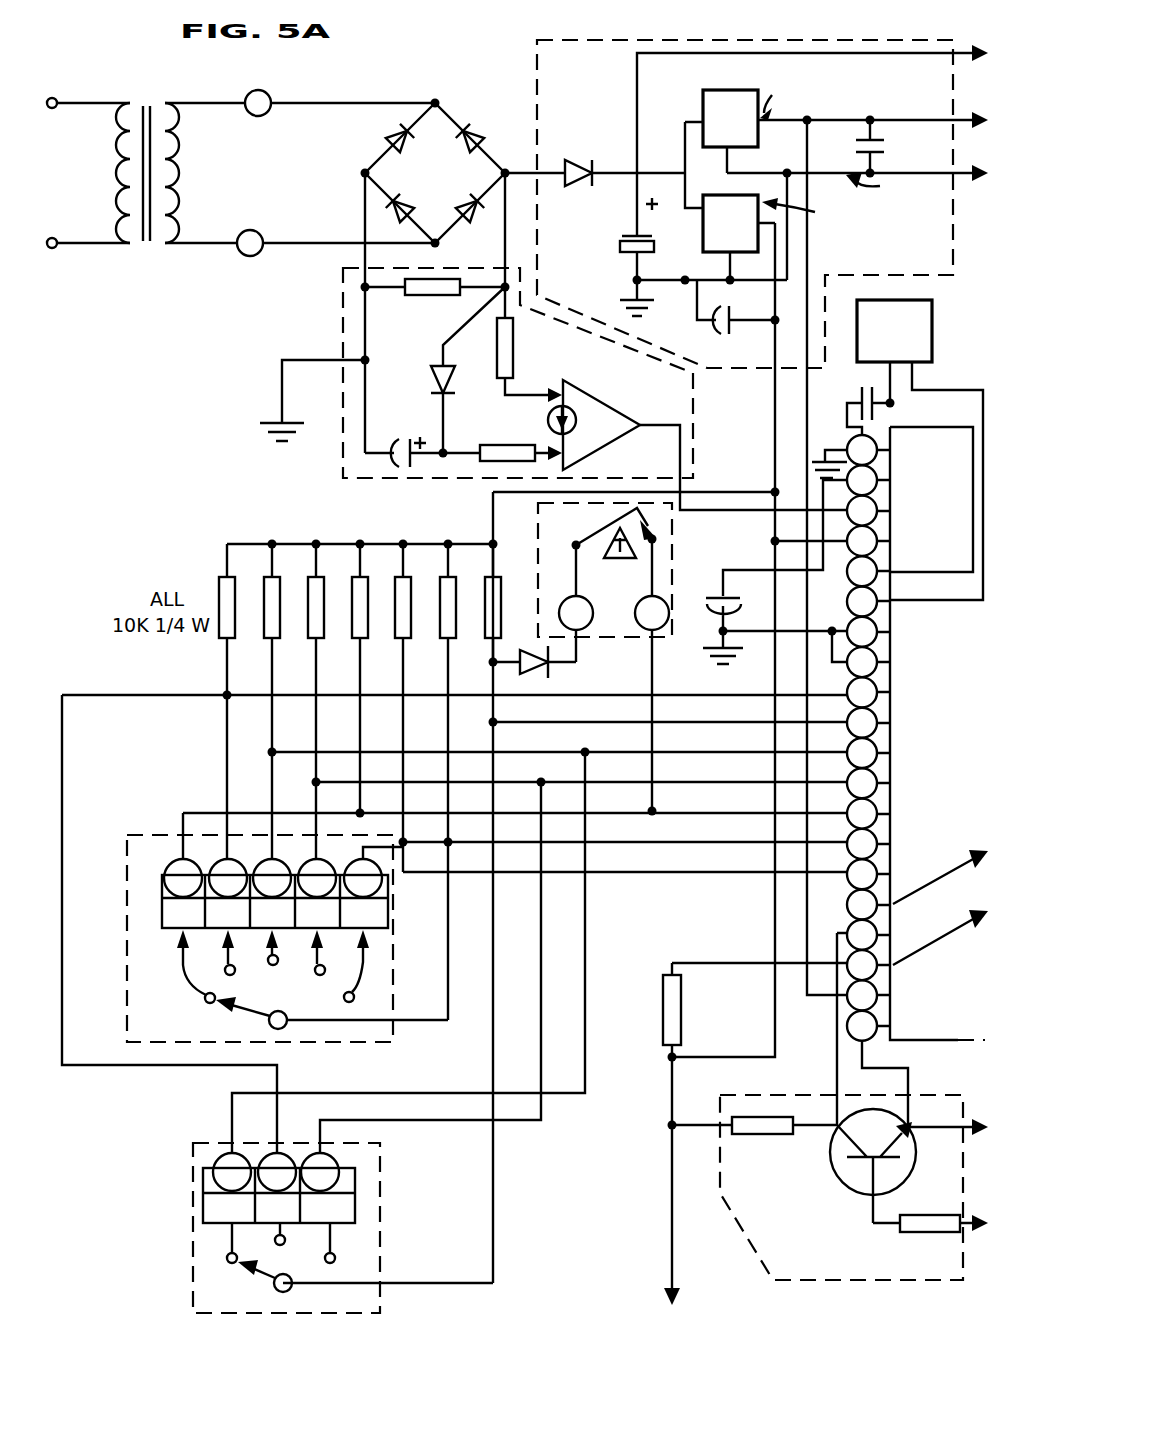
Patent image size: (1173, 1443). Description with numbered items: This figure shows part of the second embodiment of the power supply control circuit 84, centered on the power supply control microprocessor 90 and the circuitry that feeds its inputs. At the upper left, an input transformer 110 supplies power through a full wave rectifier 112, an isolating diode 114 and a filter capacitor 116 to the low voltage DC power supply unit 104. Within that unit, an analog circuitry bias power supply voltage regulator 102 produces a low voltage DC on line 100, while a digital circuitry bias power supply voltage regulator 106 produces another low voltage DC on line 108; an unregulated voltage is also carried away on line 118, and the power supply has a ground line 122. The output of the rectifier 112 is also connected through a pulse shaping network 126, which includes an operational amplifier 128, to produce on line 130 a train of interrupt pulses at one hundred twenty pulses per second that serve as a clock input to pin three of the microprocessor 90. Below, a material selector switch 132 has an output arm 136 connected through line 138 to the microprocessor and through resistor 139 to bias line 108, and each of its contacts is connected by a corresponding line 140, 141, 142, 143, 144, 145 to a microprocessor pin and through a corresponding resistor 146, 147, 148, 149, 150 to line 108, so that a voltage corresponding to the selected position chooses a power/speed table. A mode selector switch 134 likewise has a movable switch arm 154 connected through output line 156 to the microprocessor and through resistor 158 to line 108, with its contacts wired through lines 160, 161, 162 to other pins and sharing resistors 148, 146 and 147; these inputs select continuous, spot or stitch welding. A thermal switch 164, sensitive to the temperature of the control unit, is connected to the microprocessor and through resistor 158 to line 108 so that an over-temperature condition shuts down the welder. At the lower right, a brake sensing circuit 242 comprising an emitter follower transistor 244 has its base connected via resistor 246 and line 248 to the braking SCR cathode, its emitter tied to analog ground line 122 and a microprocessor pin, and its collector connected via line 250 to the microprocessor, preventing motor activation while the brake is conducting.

The power supply control circuit 84 is at (178, 465).
The power supply control microprocessor 90 is at (928, 1040).
The line 100 is at (756, 122).
The analog circuitry bias power supply voltage regulator 102 is at (712, 72).
The low voltage DC power supply unit 104 is at (537, 72).
The digital circuitry bias power supply voltage regulator 106 is at (700, 248).
The line 108 is at (493, 500).
The input transformer 110 is at (148, 262).
The full wave rectifier 112 is at (365, 173).
The isolating diode 114 is at (558, 158).
The filter capacitor 116 is at (620, 246).
The line 118 is at (637, 80).
The ground line 122 is at (955, 176).
The pulse shaping network 126 is at (343, 318).
The operational amplifier 128 is at (618, 438).
The line 130 is at (714, 497).
The material selector switch 132 is at (133, 828).
The mode selector switch 134 is at (190, 1152).
The output arm 136 is at (244, 980).
The line 138 is at (402, 1024).
The resistor 139 is at (444, 648).
The line 140 is at (207, 810).
The line 141 is at (224, 754).
The line 142 is at (268, 784).
The line 143 is at (316, 784).
The line 144 is at (360, 812).
The line 145 is at (387, 845).
The resistor 146 is at (220, 648).
The resistor 147 is at (268, 648).
The resistor 148 is at (312, 648).
The resistor 149 is at (356, 648).
The resistor 150 is at (398, 648).
The movable switch arm 154 is at (260, 1272).
The output line 156 is at (452, 1288).
The resistor 158 is at (488, 648).
The line 160 is at (230, 1093).
The line 161 is at (132, 1070).
The line 162 is at (407, 1122).
The thermal switch 164 is at (606, 645).
The brake sensing circuit 242 is at (855, 1281).
The emitter follower transistor 244 is at (855, 1105).
The resistor 246 is at (905, 1214).
The line 248 is at (963, 1242).
The line 250 is at (838, 1025).